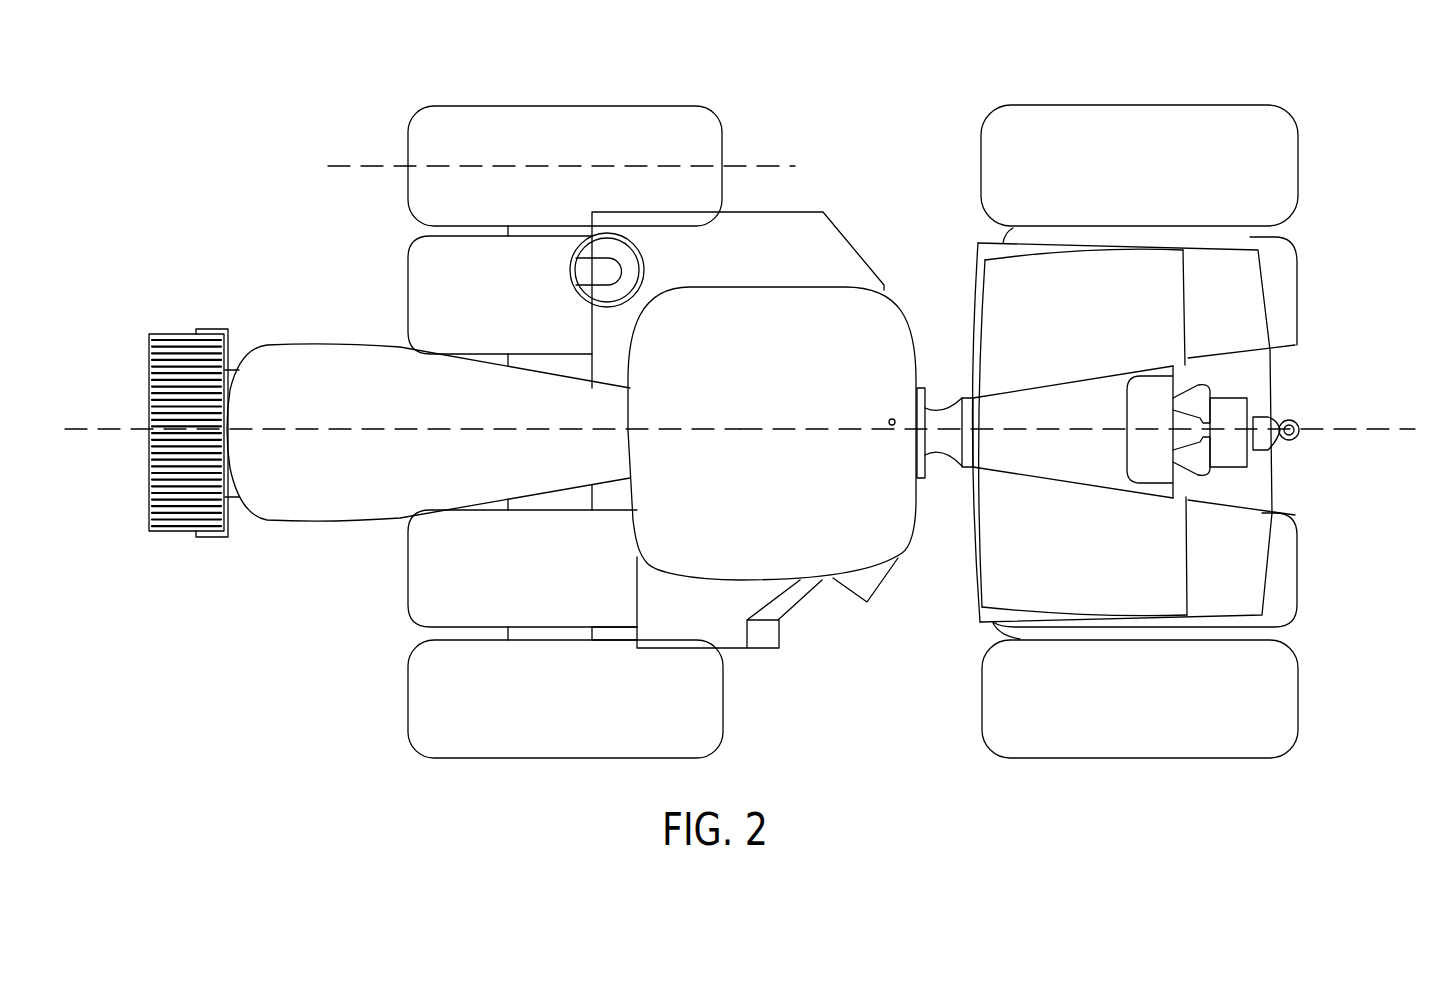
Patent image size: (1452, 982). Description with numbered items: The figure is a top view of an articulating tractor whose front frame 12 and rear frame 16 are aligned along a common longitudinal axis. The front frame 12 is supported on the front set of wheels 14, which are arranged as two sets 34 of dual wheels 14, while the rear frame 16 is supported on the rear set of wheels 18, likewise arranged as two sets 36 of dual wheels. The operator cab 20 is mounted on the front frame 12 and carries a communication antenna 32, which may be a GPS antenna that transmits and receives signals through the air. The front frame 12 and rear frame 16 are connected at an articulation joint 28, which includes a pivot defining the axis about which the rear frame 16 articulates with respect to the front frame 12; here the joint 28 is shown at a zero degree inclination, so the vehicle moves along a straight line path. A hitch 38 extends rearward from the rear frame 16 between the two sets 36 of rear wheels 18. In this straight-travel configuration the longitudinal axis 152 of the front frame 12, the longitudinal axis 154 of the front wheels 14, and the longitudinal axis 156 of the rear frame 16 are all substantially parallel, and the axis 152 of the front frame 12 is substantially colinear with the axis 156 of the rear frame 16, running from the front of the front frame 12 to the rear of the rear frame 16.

The front frame 12 is at (237, 512).
The front set of wheels 14 is at (412, 298).
The rear frame 16 is at (975, 575).
The rear set of wheels 18 is at (993, 135).
The operator cab 20 is at (830, 600).
The articulation joint 28 is at (946, 390).
The communication antenna 32 is at (889, 419).
The set of dual wheels 34 is at (386, 148).
The set of dual wheels 36 is at (1314, 108).
The hitch 38 is at (1282, 418).
The longitudinal axis of the front frame 152 is at (267, 427).
The longitudinal axis of the front wheels 154 is at (552, 163).
The longitudinal axis of the rear frame 156 is at (1418, 420).